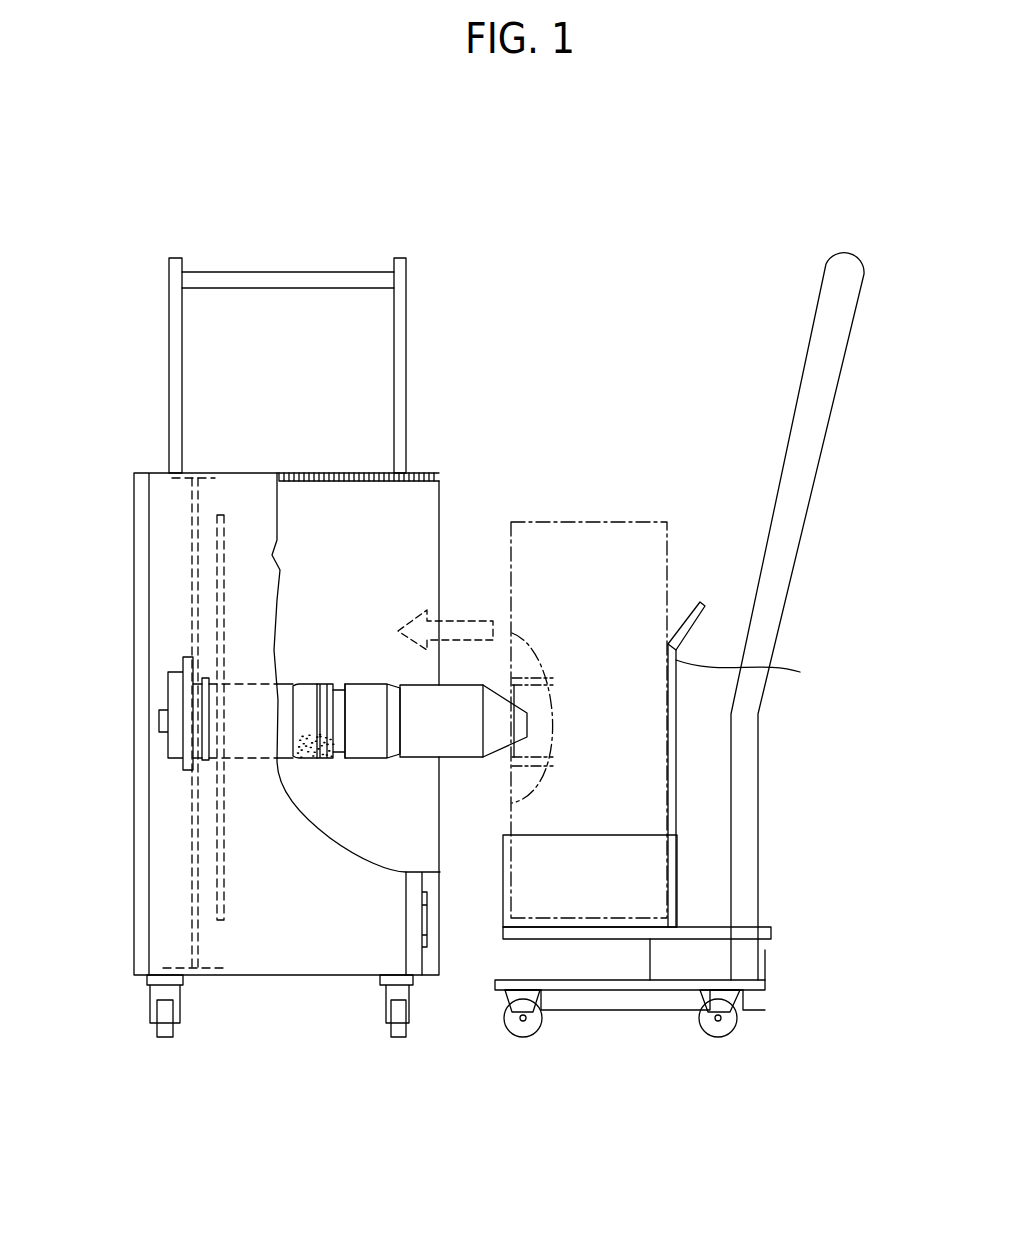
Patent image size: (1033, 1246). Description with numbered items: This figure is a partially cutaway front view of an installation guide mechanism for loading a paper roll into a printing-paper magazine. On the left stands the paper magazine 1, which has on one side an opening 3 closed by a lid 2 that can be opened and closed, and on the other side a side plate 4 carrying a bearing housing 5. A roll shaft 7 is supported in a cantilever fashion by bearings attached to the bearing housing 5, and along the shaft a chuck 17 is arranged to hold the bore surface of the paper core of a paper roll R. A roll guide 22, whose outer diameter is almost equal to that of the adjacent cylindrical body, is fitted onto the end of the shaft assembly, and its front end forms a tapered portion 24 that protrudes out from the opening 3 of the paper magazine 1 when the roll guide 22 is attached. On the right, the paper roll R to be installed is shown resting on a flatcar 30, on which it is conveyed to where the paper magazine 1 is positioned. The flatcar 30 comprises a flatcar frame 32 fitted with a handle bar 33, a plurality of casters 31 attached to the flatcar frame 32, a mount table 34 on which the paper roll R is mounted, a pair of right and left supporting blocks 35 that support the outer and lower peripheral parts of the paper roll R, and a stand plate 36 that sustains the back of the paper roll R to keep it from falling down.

The paper magazine 1 is at (145, 430).
The lid 2 is at (412, 963).
The opening 3 is at (418, 502).
The side plate 4 is at (190, 567).
The bearing housing 5 is at (178, 684).
The roll shaft 7 is at (469, 652).
The chuck 17 is at (308, 700).
The roll guide 22 is at (458, 698).
The tapered portion 24 is at (500, 722).
The paper roll R is at (590, 518).
The flatcar 30 is at (719, 672).
The casters 31 is at (527, 1028).
The flatcar frame 32 is at (590, 990).
The handle bar 33 is at (746, 728).
The mount table 34 is at (692, 935).
The supporting blocks 35 is at (623, 862).
The stand plate 36 is at (800, 672).